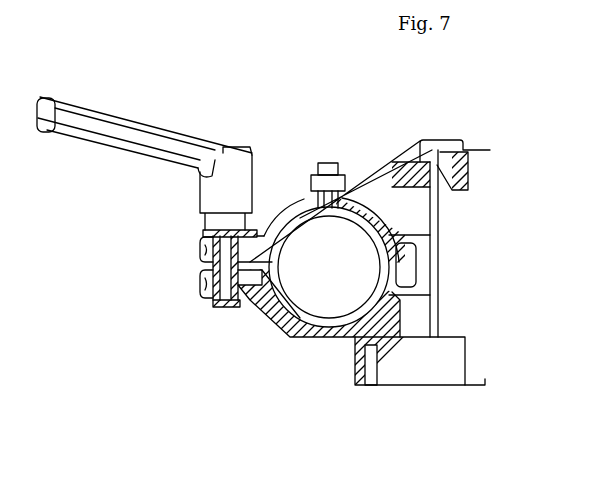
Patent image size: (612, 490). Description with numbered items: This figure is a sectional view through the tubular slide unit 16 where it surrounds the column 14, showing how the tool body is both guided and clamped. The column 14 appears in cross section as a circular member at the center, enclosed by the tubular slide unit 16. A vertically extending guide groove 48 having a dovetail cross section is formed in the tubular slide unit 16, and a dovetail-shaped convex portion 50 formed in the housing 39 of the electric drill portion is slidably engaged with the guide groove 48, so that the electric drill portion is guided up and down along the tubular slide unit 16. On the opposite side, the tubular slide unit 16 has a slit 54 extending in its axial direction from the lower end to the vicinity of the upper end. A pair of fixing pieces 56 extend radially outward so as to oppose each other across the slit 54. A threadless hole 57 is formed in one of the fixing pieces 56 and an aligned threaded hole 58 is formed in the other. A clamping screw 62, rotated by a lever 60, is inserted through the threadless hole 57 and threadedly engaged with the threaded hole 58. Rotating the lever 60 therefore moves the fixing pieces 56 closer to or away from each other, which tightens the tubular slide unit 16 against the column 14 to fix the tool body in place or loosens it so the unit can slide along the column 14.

The column 14 is at (286, 323).
The tubular slide unit 16 is at (307, 332).
The housing 39 is at (482, 126).
The guide groove 48 is at (448, 340).
The dovetail-shaped convex portion 50 is at (378, 138).
The slit 54 is at (236, 250).
The fixing pieces 56 is at (200, 233).
The threadless hole 57 is at (200, 257).
The threaded hole 58 is at (200, 282).
The lever 60 is at (100, 113).
The clamping screw 62 is at (228, 240).